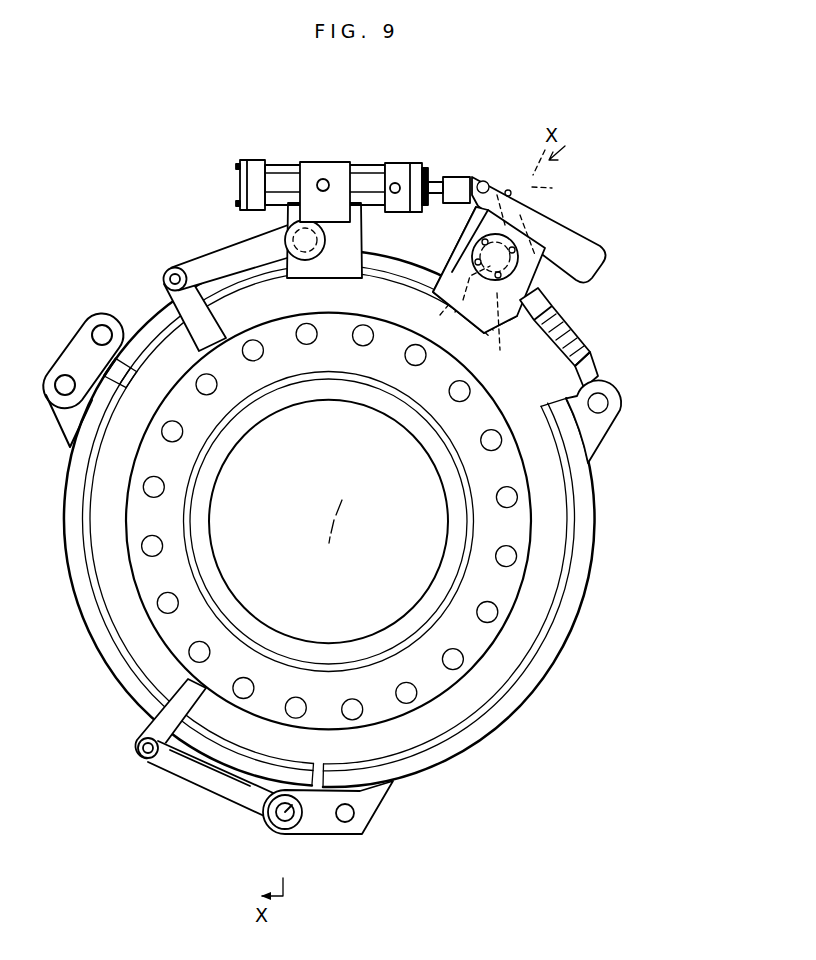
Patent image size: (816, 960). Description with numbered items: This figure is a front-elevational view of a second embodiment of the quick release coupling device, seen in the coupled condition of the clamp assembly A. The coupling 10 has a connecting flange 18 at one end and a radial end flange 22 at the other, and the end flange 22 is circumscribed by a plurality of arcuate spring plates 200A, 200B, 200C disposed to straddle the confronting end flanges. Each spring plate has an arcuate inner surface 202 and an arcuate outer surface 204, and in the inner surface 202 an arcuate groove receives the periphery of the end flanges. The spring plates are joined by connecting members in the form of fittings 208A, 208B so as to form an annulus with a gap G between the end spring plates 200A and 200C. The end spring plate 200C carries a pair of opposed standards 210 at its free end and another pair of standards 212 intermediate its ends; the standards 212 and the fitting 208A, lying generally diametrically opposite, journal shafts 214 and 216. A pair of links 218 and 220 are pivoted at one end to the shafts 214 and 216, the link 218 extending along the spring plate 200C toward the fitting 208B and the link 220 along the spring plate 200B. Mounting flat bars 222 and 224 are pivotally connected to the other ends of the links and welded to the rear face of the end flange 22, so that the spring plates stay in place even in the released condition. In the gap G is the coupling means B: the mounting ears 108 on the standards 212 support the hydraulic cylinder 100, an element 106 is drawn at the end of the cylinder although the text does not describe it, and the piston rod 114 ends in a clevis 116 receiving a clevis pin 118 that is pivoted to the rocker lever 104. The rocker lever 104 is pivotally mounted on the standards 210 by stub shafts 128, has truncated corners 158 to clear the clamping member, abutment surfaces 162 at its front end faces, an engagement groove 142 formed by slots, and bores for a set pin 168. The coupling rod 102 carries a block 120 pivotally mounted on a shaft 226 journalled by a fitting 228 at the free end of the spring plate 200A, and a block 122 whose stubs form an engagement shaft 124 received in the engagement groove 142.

The coupling 10 is at (547, 570).
The connecting flange 18 is at (380, 380).
The end flange 22 is at (445, 445).
The hydraulic cylinder 100 is at (284, 163).
The coupling rod 102 is at (564, 330).
The rocker lever 104 is at (572, 230).
The cylinder end cap 106 is at (372, 164).
The mounting ears 108 is at (325, 180).
The piston rod 114 is at (447, 176).
The clevis 116 is at (481, 182).
The clevis pin 118 is at (504, 190).
The block 120 is at (612, 388).
The block 122 is at (528, 292).
The engagement shaft 124 is at (442, 305).
The stub shafts 128 is at (474, 305).
The engagement groove 142 is at (538, 196).
The truncated corners 158 is at (498, 300).
The abutment surfaces 162 is at (600, 268).
The set pin 168 is at (512, 190).
The arcuate spring plate 200A is at (570, 640).
The arcuate spring plate 200B is at (160, 735).
The arcuate spring plate 200C is at (158, 318).
The inner surface 202 is at (452, 665).
The outer surface 204 is at (515, 720).
The connecting member 208A is at (348, 836).
The connecting member 208B is at (78, 356).
The standards 210 is at (458, 272).
The standards 212 is at (345, 250).
The shaft 214 is at (296, 236).
The shaft 216 is at (272, 820).
The link 218 is at (228, 268).
The link 220 is at (210, 790).
The mounting flat bar 222 is at (212, 332).
The mounting flat bar 224 is at (165, 730).
The shaft 226 is at (608, 403).
The fitting 228 is at (592, 442).
The clamp assembly A is at (470, 773).
The coupling means B is at (580, 312).
The gap G is at (634, 288).